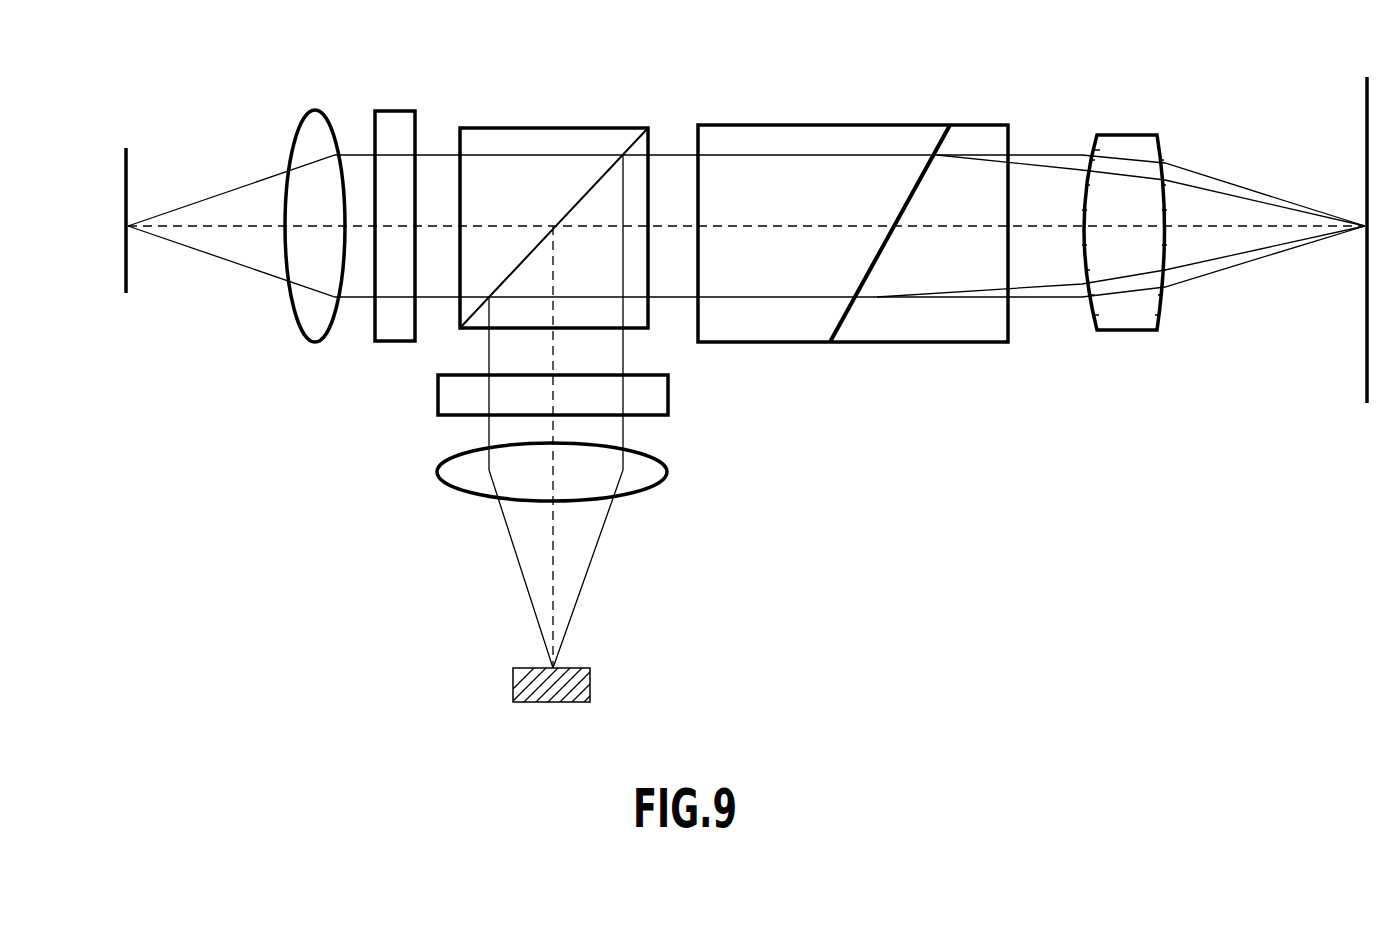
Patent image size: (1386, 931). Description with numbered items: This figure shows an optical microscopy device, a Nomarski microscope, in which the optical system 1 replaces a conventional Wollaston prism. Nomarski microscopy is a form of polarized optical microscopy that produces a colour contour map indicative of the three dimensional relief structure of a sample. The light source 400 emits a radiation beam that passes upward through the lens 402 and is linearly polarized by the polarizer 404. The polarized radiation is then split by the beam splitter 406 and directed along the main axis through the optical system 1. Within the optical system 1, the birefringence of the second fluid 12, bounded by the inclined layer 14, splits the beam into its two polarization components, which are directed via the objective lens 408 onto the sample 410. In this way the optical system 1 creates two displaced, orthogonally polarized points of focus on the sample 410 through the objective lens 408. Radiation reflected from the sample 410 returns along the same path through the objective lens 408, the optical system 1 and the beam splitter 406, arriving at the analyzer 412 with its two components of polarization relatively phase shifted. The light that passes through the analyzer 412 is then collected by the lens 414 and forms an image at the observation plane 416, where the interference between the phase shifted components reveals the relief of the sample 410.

The optical system 1 is at (853, 245).
The second fluid 12 is at (902, 330).
The polarizing layer 14 is at (922, 168).
The light source 400 is at (513, 688).
The collimating lens 402 is at (472, 475).
The polarizer 404 is at (463, 397).
The beam splitter 406 is at (505, 127).
The objective lens 408 is at (1123, 135).
The sample 410 is at (1365, 110).
The analyzer 412 is at (388, 330).
The analyzer 414 is at (312, 112).
The observation plane 416 is at (125, 180).